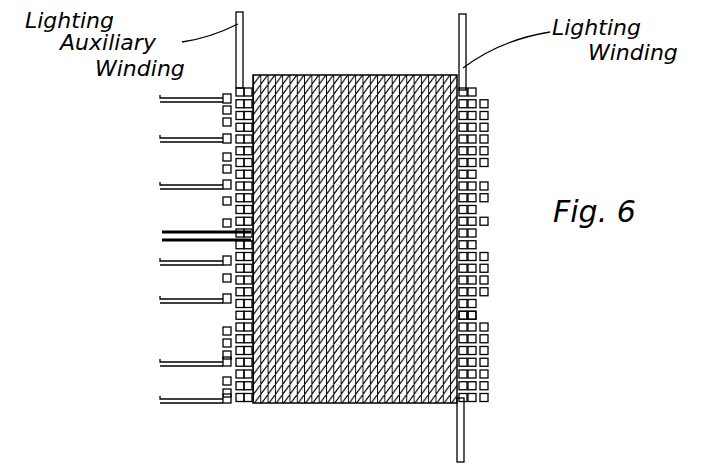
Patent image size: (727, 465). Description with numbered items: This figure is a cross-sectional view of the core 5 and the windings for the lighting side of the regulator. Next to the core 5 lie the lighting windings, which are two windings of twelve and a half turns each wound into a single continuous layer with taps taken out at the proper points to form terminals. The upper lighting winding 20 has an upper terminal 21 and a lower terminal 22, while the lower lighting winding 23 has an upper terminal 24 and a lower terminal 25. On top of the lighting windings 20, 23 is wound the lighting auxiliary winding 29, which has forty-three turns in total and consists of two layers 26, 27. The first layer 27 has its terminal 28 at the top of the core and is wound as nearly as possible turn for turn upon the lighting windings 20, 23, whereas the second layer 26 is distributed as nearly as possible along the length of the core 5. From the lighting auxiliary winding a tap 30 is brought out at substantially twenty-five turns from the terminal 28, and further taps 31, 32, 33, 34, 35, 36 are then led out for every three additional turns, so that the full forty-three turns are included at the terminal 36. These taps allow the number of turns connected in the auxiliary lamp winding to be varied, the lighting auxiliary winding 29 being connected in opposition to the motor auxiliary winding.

The core 5 is at (498, 120).
The upper lighting winding 20 is at (462, 180).
The upper terminal 21 is at (463, 42).
The lower terminal 22 is at (162, 231).
The lower lighting winding 23 is at (462, 320).
The upper terminal 24 is at (162, 243).
The lower terminal 25 is at (458, 445).
The second layer 26 is at (226, 408).
The first layer 27 is at (238, 408).
The terminal 28 is at (243, 25).
The lighting auxiliary winding 29 is at (224, 170).
The tap 30 is at (160, 396).
The tap 31 is at (160, 357).
The tap 32 is at (160, 298).
The tap 33 is at (160, 258).
The tap 34 is at (160, 183).
The tap 35 is at (160, 136).
The terminal 36 is at (160, 95).